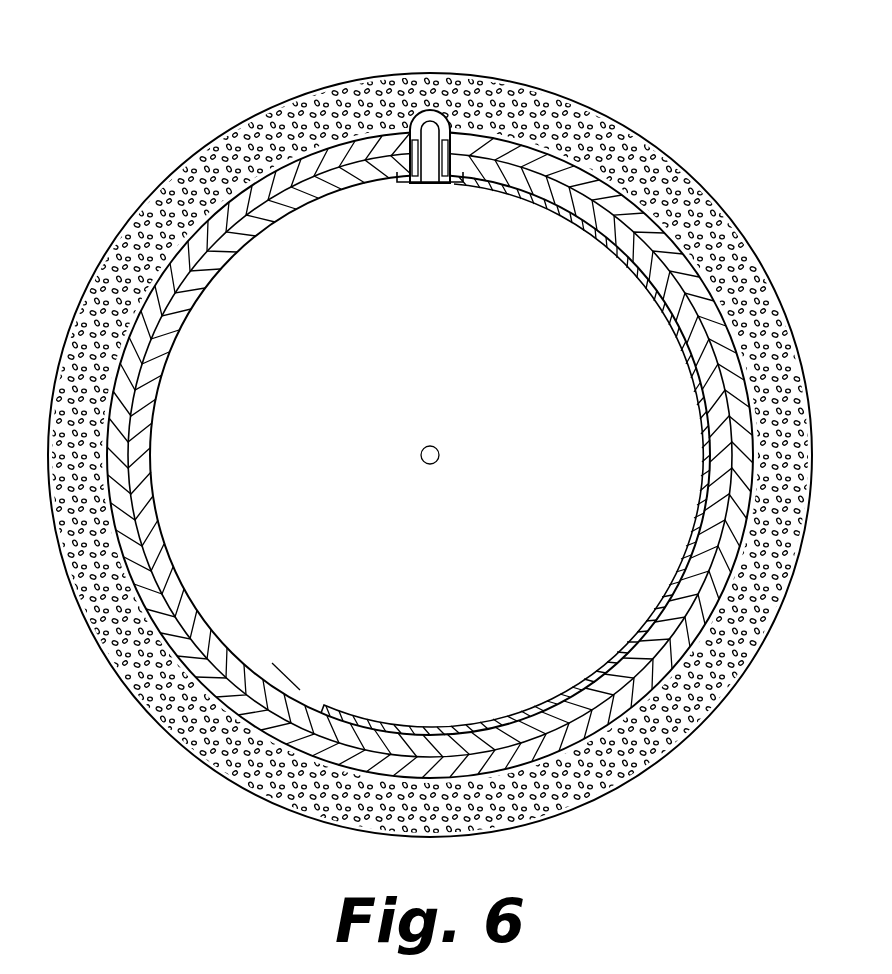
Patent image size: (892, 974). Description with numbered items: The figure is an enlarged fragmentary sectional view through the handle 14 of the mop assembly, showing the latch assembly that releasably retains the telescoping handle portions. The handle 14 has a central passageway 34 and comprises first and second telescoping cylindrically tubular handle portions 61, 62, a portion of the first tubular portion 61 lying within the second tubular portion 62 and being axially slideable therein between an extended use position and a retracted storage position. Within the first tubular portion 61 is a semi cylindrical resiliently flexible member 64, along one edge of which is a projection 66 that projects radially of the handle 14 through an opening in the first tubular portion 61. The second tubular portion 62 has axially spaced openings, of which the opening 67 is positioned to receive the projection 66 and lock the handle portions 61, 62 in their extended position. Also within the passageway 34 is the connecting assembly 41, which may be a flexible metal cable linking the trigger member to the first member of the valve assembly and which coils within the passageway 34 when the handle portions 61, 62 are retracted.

The handle 14 is at (148, 600).
The central passageway 34 is at (272, 663).
The connecting assembly 41 is at (422, 450).
The first tubular handle portion 61 is at (700, 350).
The second tubular handle portion 62 is at (740, 408).
The semi cylindrical resiliently flexible member 64 is at (672, 300).
The projection 66 is at (428, 112).
The opening 67 is at (432, 170).